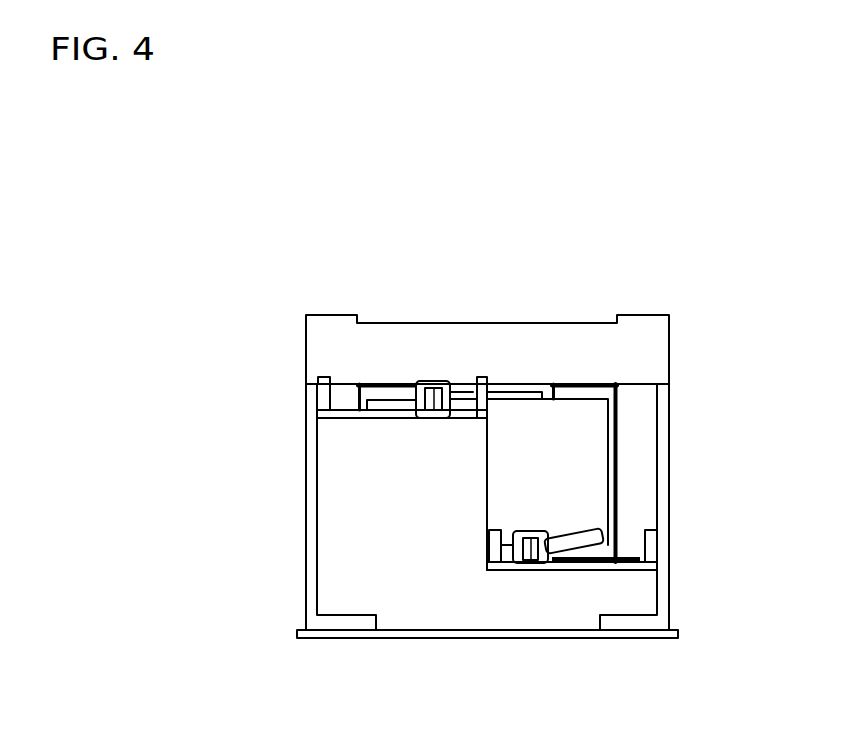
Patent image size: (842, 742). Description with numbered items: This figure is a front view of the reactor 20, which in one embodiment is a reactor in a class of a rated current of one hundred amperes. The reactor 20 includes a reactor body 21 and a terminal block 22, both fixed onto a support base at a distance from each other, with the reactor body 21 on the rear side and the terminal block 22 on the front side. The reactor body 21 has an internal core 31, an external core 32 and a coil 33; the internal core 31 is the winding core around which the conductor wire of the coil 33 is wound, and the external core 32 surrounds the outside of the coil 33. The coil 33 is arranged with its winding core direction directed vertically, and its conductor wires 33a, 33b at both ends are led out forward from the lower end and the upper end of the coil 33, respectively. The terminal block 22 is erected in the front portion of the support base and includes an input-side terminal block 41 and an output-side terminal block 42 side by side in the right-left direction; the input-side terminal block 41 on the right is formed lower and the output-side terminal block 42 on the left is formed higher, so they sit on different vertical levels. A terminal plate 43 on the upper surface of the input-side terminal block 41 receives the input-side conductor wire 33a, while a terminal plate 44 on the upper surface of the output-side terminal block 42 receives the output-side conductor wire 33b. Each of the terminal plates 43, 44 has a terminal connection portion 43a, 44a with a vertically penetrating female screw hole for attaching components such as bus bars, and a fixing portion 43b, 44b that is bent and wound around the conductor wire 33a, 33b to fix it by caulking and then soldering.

The reactor 20 is at (288, 295).
The reactor body 21 is at (682, 315).
The terminal block 22 is at (315, 527).
The internal core 31 is at (513, 392).
The external core 32 is at (670, 430).
The coil 33 is at (585, 412).
The input-side conductor wire 33a is at (533, 557).
The output-side conductor wire 33b is at (440, 392).
The input-side terminal block 41 is at (638, 592).
The output-side terminal block 42 is at (347, 550).
The input-side terminal plate 43 is at (608, 572).
The terminal connection portion 43a is at (623, 557).
The fixing portion 43b is at (530, 530).
The output-side terminal plate 44 is at (365, 418).
The terminal connection portion 44a is at (340, 410).
The fixing portion 44b is at (417, 380).